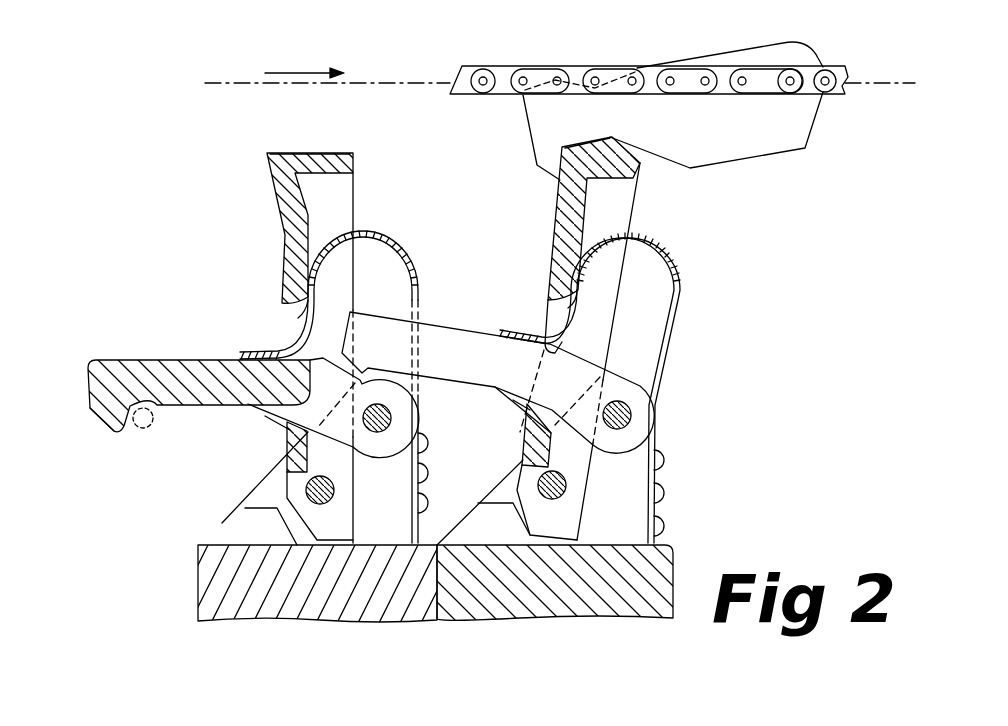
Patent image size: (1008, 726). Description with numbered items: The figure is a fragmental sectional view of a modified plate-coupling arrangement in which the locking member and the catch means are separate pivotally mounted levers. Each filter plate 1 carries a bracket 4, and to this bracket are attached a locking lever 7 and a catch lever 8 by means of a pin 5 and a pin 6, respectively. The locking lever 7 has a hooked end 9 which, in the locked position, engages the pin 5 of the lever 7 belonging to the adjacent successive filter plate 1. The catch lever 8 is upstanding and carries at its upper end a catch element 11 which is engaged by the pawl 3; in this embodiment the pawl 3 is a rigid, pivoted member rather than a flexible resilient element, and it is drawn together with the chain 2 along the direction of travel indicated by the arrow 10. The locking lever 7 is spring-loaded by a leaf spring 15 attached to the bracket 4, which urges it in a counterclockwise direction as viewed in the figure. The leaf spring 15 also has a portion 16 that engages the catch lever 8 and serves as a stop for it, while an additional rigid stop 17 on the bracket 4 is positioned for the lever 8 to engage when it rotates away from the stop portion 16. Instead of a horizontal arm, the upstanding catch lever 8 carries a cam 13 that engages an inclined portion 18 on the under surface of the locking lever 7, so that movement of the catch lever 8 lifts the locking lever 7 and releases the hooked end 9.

The filter plate 1 is at (198, 583).
The conveyor chain 2 is at (508, 68).
The pawl 3 is at (805, 134).
The bracket 4 is at (412, 528).
The pin 5 is at (385, 432).
The pin 6 is at (328, 501).
The locking lever 7 is at (150, 360).
The catch lever 8 is at (283, 202).
The hooked end 9 is at (117, 440).
The direction of conveyance 10 is at (284, 78).
The catch element 11 is at (322, 156).
The cam 13 is at (287, 447).
The leaf spring 15 is at (408, 252).
The stop portion 16 is at (312, 284).
The rigid stop 17 is at (225, 528).
The inclined portion 18 is at (265, 416).